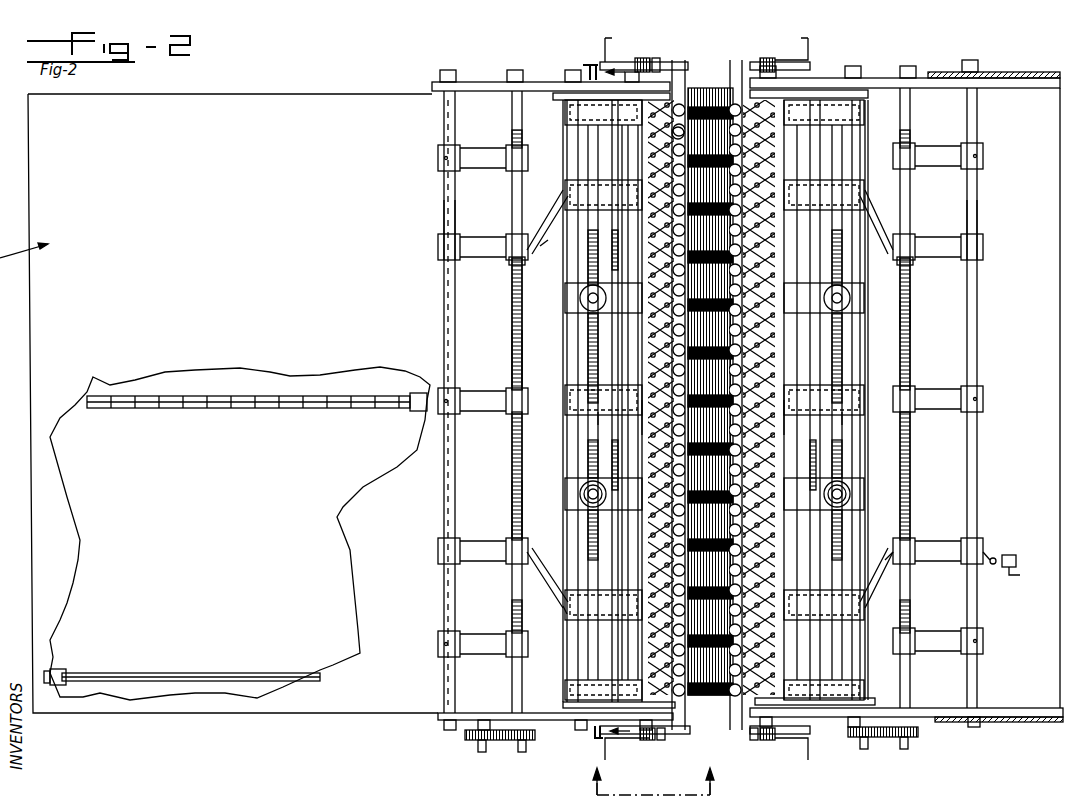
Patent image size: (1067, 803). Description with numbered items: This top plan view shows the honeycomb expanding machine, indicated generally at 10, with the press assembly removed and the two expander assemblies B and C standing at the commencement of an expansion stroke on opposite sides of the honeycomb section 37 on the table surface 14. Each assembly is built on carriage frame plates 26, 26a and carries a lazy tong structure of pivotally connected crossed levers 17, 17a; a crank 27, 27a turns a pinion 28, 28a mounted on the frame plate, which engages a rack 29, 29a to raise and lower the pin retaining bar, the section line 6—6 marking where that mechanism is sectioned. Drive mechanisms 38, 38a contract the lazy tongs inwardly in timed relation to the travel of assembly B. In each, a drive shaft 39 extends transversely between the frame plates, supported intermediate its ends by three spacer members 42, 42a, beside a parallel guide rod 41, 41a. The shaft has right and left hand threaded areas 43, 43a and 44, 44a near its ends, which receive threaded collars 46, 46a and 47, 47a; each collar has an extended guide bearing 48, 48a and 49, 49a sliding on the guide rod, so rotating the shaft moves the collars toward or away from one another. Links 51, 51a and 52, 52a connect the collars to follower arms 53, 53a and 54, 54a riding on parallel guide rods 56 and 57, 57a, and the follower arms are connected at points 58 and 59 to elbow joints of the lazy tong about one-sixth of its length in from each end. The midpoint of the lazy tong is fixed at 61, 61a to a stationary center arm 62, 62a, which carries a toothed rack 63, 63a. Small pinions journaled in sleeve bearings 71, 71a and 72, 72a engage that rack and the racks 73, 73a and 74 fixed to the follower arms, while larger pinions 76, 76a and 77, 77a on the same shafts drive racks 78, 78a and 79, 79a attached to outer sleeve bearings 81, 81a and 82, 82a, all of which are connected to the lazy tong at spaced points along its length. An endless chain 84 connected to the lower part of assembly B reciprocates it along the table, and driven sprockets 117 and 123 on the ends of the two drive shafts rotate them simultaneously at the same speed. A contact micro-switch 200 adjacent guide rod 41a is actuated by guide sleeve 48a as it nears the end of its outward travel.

The section line 6 is at (652, 774).
The apparatus 10 is at (606, 401).
The table surface 14 is at (272, 203).
The crossed levers 17 is at (650, 150).
The crossed levers 17a is at (775, 146).
The carriage frame plates 26 is at (500, 82).
The carriage frame plates 26a is at (875, 83).
The crank 27 is at (615, 50).
The crank 27a is at (812, 58).
The pinion 28 is at (648, 60).
The pinion 28a is at (766, 58).
The rack 29 is at (660, 64).
The rack 29a is at (756, 742).
The honeycomb section 37 is at (720, 695).
The drive mechanism 38 is at (573, 420).
The drive mechanism 38a is at (902, 446).
The drive shaft 39 is at (514, 368).
The guide rod 41 is at (444, 285).
The guide rod 41a is at (978, 322).
The spacer members 42 is at (482, 168).
The spacer members 42a is at (936, 167).
The right hand threaded area 43 is at (513, 520).
The threaded area 43a is at (910, 290).
The left hand threaded area 44 is at (512, 265).
The left hand threaded area 44a is at (910, 305).
The threaded collar 46 is at (563, 597).
The threaded collar 46a is at (910, 545).
The threaded collar 47 is at (525, 262).
The threaded collar 47a is at (897, 258).
The extended guide bearing 48 is at (440, 556).
The guide sleeve 48a is at (985, 550).
The extended guide bearing 49 is at (444, 240).
The extended guide bearing 49a is at (978, 240).
The link 51 is at (535, 570).
The link 51a is at (893, 605).
The link 52 is at (540, 242).
The link 52a is at (895, 215).
The follower arm 53 is at (567, 612).
The follower arm 53a is at (860, 620).
The follower arm 54 is at (567, 186).
The follower arm 54a is at (860, 185).
The guide rod 56 is at (578, 350).
The guide rod 57 is at (640, 328).
The guide rod 57a is at (842, 340).
The point of connection 58 is at (632, 620).
The point of connection 59 is at (655, 190).
The center connection 61 is at (645, 435).
The center connection 61a is at (850, 420).
The stationary center arm 62 is at (603, 414).
The stationary center arm 62a is at (858, 388).
The rack 63 is at (615, 386).
The rack 63a is at (858, 372).
The sleeve bearing 71 is at (575, 492).
The sleeve bearing 71a is at (862, 505).
The sleeve bearing 72 is at (565, 298).
The sleeve bearing 72a is at (858, 310).
The rack 73 is at (590, 521).
The rack 73a is at (845, 530).
The rack 74 is at (562, 188).
The pinion 76 is at (590, 476).
The pinion 76a is at (845, 478).
The pinion 77 is at (592, 318).
The pinion 77a is at (842, 325).
The rack 78 is at (590, 645).
The rack 78a is at (838, 628).
The rack 79 is at (590, 148).
The rack 79a is at (840, 140).
The outer sleeve bearing 81 is at (563, 698).
The outer sleeve bearing 81a is at (870, 695).
The outer sleeve bearing 82 is at (558, 104).
The outer sleeve bearing 82a is at (868, 97).
The endless chain drive 84 is at (285, 408).
The driven sprocket 117 is at (530, 742).
The driven sprocket 123 is at (920, 740).
The contact micro-switch 200 is at (1017, 570).